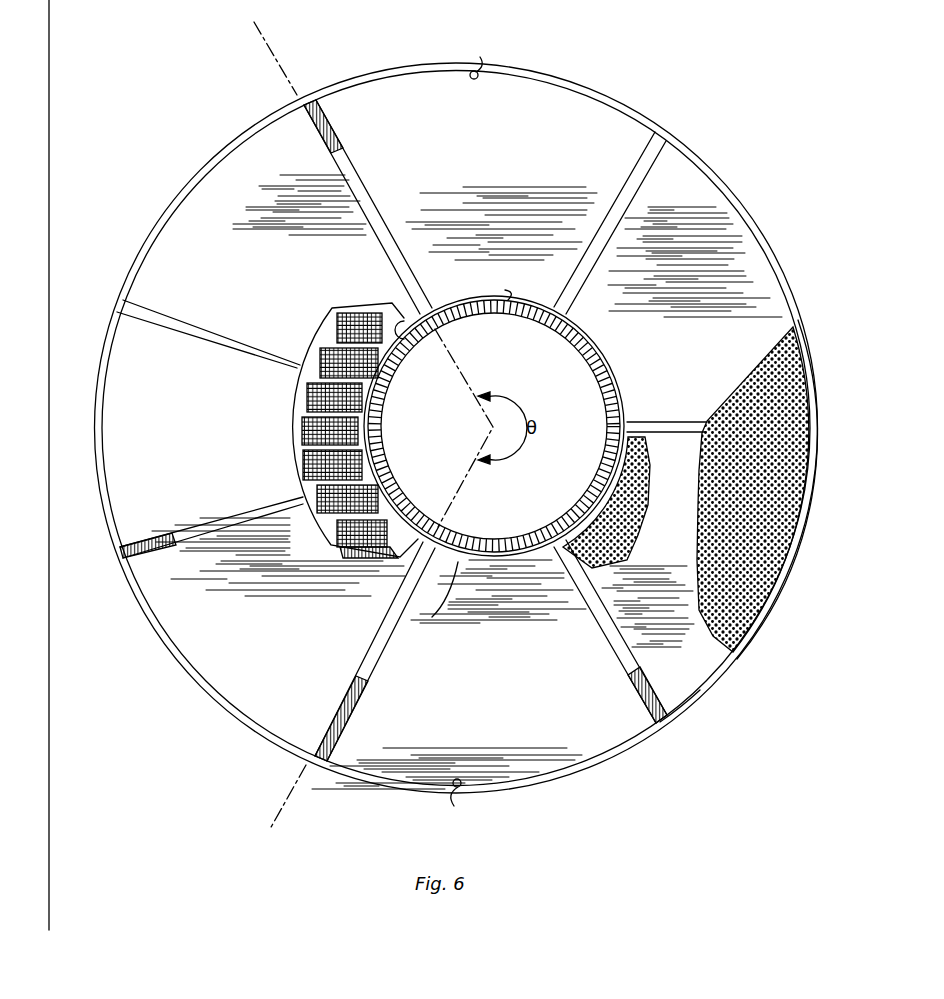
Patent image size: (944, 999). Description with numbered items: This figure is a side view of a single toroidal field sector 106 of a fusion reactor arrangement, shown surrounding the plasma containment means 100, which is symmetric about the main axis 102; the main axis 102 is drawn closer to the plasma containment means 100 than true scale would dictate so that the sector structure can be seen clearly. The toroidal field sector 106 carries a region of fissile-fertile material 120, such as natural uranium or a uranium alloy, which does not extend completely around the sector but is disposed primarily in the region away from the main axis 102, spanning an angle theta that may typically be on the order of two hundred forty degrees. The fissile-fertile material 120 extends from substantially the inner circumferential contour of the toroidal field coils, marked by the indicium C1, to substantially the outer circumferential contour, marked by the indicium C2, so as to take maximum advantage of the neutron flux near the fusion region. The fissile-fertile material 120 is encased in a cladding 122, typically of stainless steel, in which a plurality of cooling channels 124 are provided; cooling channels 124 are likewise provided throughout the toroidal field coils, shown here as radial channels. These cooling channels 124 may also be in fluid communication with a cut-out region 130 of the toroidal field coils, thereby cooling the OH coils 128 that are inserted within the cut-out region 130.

The plasma containment means 100 is at (603, 382).
The main axis 102 is at (72, 75).
The toroidal field sector 106 is at (600, 90).
The fissile-fertile material region 120 is at (713, 449).
The cladding 122 is at (746, 612).
The cooling channels 124 is at (754, 238).
The OH coils 128 is at (354, 564).
The cut-out region 130 is at (378, 288).
The inner circumferential contour C1 is at (461, 451).
The outer circumferential contour C2 is at (466, 432).